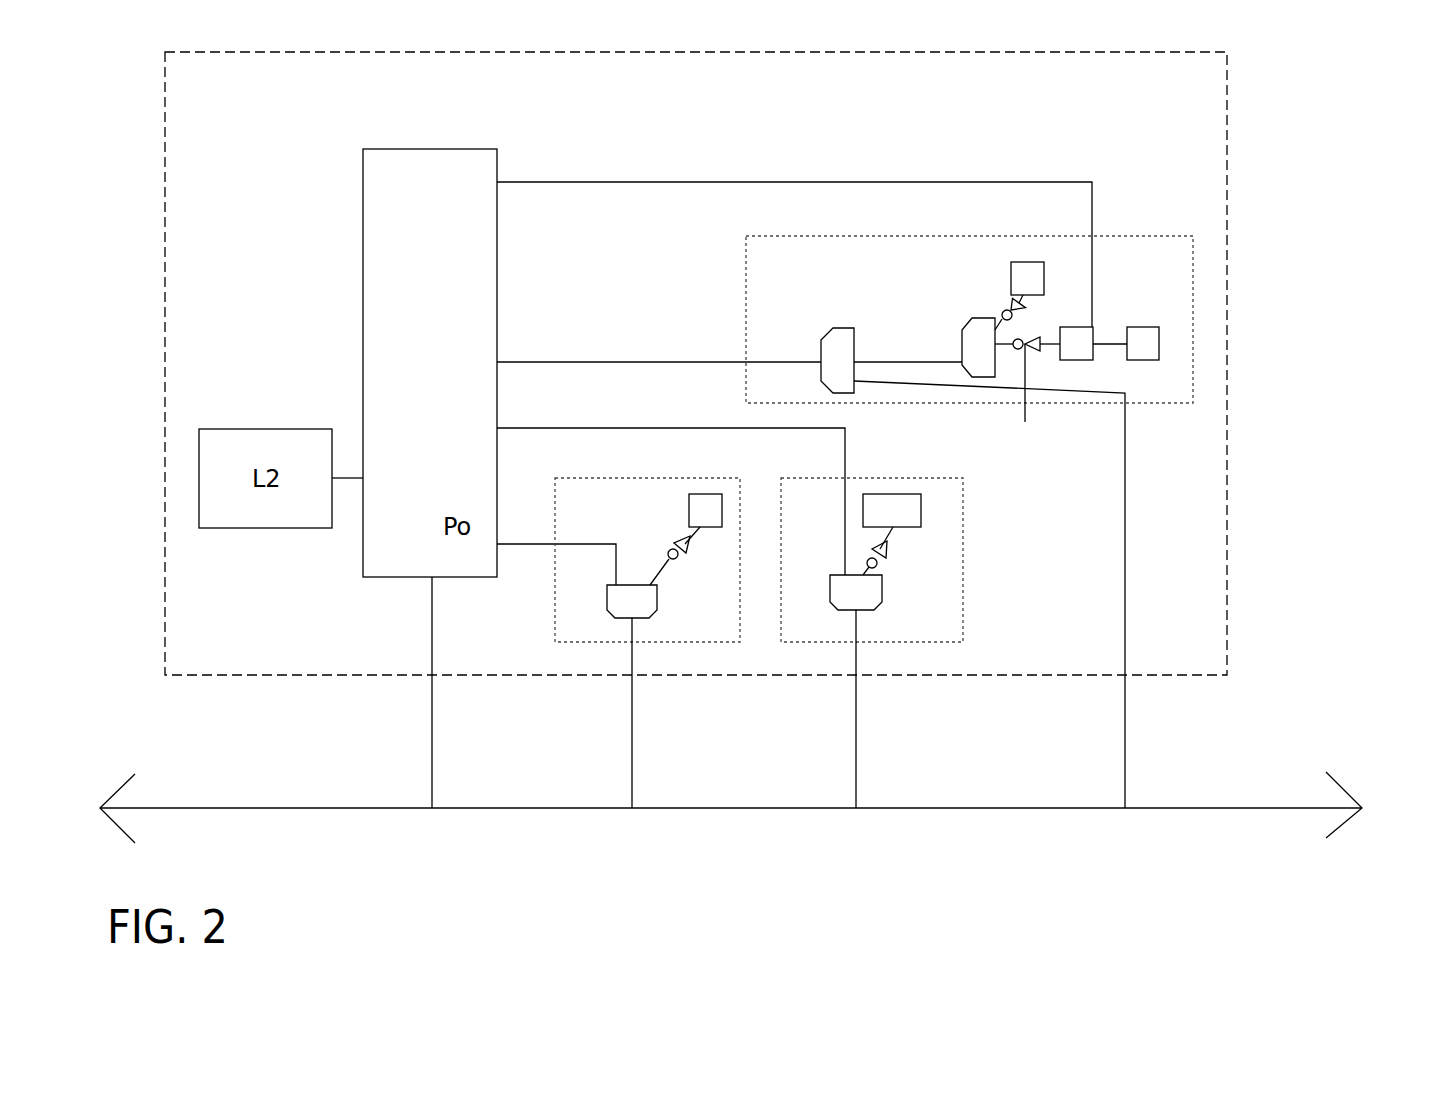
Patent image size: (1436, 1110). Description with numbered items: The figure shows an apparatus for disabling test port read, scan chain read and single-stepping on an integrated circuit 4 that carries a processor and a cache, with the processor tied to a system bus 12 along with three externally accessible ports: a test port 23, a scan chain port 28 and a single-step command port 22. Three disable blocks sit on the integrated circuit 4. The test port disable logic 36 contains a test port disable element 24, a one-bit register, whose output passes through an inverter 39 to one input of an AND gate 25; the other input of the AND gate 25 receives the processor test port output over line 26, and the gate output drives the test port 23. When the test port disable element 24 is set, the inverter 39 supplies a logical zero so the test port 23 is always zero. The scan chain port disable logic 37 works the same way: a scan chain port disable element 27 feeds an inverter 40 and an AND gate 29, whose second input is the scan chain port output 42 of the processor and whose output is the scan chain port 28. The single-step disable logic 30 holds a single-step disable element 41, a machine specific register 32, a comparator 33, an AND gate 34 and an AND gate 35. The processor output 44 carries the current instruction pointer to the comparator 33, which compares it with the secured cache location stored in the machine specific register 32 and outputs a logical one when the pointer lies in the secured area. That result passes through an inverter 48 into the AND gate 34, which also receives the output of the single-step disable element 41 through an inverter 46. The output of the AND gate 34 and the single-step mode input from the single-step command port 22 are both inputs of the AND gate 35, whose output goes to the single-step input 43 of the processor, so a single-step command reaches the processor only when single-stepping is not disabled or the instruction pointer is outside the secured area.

The integrated circuit 4 is at (771, 363).
The system bus 12 is at (731, 843).
The single-step command port 22 is at (1106, 594).
The test port 23 is at (667, 713).
The test port disable element 24 is at (766, 478).
The AND gate 25 is at (632, 601).
The line to test port gate 26 is at (556, 556).
The scan chain port disable element 27 is at (935, 516).
The scan chain port 28 is at (903, 709).
The AND gate 29 is at (856, 592).
The single-step disable logic 30 is at (1045, 345).
The machine specific register 32 is at (1172, 343).
The comparator 33 is at (1105, 370).
The AND gate 34 is at (978, 347).
The AND gate 35 is at (837, 360).
The test port disable logic 36 is at (560, 566).
The scan chain port disable logic 37 is at (925, 569).
The inverter 39 is at (682, 508).
The inverter 40 is at (890, 551).
The single-step disable element 41 is at (1270, 233).
The scan chain port output 42 is at (652, 483).
The single-step input 43 is at (659, 338).
The output 44 is at (794, 229).
The inverter 46 is at (998, 300).
The inverter 48 is at (1012, 392).